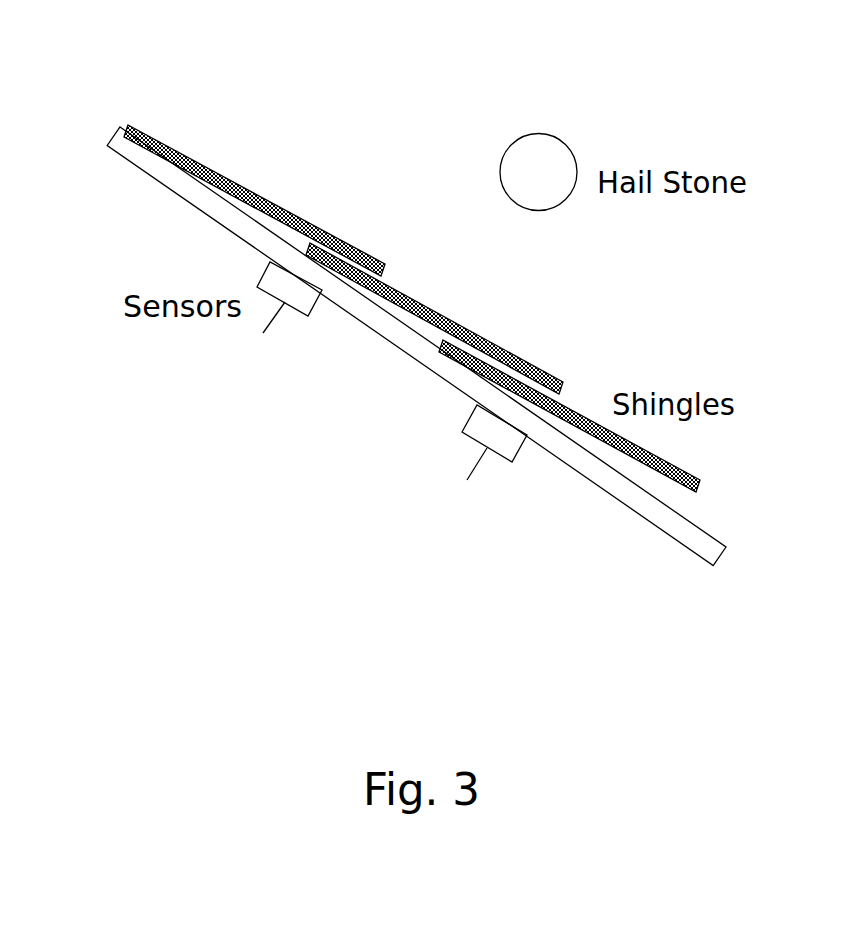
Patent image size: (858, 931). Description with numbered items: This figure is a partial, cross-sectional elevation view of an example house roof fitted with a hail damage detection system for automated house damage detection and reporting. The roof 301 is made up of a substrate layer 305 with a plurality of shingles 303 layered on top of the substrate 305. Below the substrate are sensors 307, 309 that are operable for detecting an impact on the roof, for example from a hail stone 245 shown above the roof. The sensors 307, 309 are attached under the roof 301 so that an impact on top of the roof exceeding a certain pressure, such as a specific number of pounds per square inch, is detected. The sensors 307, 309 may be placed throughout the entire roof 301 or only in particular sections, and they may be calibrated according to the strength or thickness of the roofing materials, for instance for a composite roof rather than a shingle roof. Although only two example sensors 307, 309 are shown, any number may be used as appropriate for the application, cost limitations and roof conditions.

The roof 301 is at (471, 319).
The shingles 303 is at (145, 123).
The substrate layer 305 is at (135, 153).
The sensor 307 is at (296, 297).
The sensor 309 is at (497, 437).
The hail stone 245 is at (547, 193).